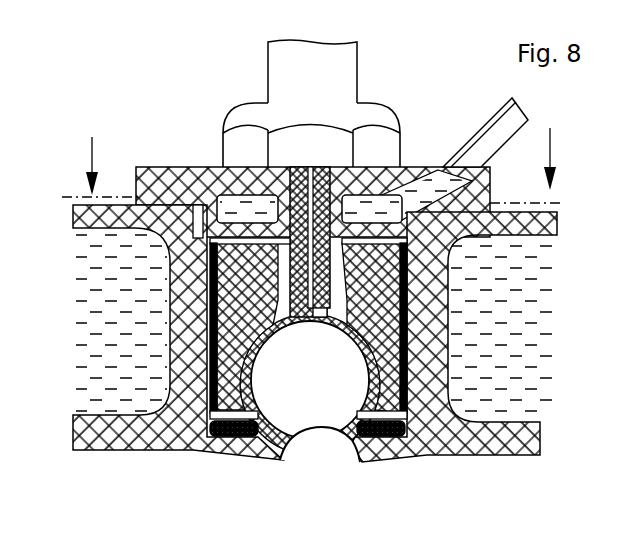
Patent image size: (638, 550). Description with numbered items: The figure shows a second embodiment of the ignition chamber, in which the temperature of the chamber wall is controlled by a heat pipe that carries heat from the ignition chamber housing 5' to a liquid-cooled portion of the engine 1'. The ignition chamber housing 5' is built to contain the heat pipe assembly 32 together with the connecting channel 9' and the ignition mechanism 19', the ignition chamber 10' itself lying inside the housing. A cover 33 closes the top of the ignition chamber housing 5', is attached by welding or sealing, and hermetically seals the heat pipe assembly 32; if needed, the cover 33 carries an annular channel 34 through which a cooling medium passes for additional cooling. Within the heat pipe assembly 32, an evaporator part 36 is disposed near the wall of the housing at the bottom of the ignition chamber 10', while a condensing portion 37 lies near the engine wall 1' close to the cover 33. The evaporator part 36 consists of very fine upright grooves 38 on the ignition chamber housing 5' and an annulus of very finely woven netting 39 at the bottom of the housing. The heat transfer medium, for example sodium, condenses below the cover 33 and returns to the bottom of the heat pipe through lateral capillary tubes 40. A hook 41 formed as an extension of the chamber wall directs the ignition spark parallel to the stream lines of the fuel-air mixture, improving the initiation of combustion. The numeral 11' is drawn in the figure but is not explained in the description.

The liquid-cooled portion of the engine 1' is at (178, 367).
The ignition chamber housing 5' is at (307, 423).
The connecting channel 9' is at (320, 478).
The ignition chamber 10' is at (310, 421).
The lower seal ring 11' is at (220, 475).
The ignition mechanism 19' is at (250, 178).
The heat pipe assembly 32 is at (430, 297).
The cover 33 is at (447, 205).
The annular channel 34 is at (380, 213).
The evaporator part 36 is at (407, 423).
The condensing portion 37 is at (255, 240).
The upright grooves 38 is at (270, 325).
The annulus of finely woven netting 39 is at (250, 422).
The lateral capillary tubes 40 is at (213, 372).
The hook 41 is at (318, 318).